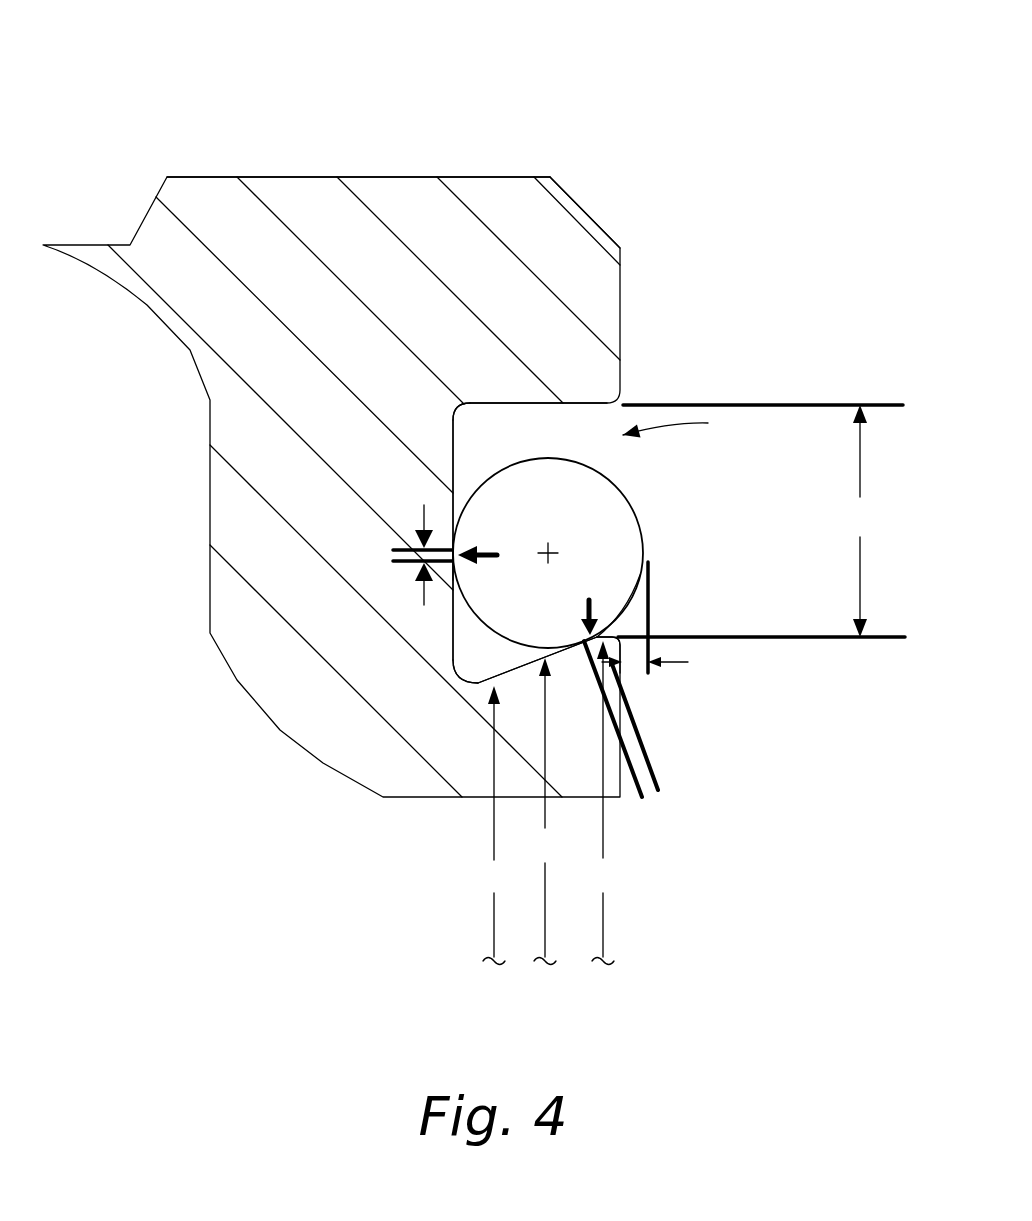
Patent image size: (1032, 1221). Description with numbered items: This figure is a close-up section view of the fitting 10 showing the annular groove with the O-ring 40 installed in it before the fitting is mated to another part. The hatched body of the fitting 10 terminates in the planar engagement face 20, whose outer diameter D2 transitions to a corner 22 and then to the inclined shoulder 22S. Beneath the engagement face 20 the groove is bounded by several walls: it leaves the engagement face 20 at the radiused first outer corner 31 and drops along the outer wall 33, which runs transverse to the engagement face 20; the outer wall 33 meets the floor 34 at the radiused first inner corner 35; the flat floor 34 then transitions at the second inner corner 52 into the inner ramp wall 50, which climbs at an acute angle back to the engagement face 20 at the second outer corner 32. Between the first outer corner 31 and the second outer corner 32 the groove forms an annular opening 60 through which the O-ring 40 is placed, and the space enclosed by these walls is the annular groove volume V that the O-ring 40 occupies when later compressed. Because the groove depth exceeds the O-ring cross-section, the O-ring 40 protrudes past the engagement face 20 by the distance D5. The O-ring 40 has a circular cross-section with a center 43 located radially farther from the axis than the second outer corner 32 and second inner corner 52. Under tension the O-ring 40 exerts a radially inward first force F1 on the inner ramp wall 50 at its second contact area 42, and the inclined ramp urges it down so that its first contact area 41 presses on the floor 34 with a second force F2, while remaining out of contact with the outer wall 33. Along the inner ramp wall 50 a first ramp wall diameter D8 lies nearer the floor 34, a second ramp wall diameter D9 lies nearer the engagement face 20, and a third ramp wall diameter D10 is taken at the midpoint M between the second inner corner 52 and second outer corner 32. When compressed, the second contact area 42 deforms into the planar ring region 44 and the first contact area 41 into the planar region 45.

The fitting 10 is at (683, 202).
The engagement face 20 is at (620, 318).
The corner 22 is at (620, 247).
The shoulder 22S is at (581, 209).
The first outer corner 31 is at (624, 396).
The second outer corner 32 is at (615, 633).
The outer wall 33 is at (528, 405).
The floor 34 is at (453, 509).
The first inner corner 35 is at (465, 412).
The O-ring 40 is at (640, 522).
The first contact area 41 is at (454, 561).
The second contact area 42 is at (641, 586).
The center 43 is at (553, 548).
The planar ring region 44 is at (612, 792).
The planar region 45 is at (422, 568).
The inner ramp wall 50 is at (572, 720).
The second inner corner 52 is at (470, 677).
The opening 60 is at (662, 482).
The first force F1 is at (587, 605).
The second force F2 is at (493, 555).
The midpoint M is at (573, 737).
The annular groove volume V is at (492, 433).
The outer diameter D2 is at (860, 521).
The distance D5 is at (659, 662).
The first ramp wall diameter D8 is at (494, 825).
The second ramp wall diameter D9 is at (603, 803).
The third ramp wall diameter D10 is at (545, 811).